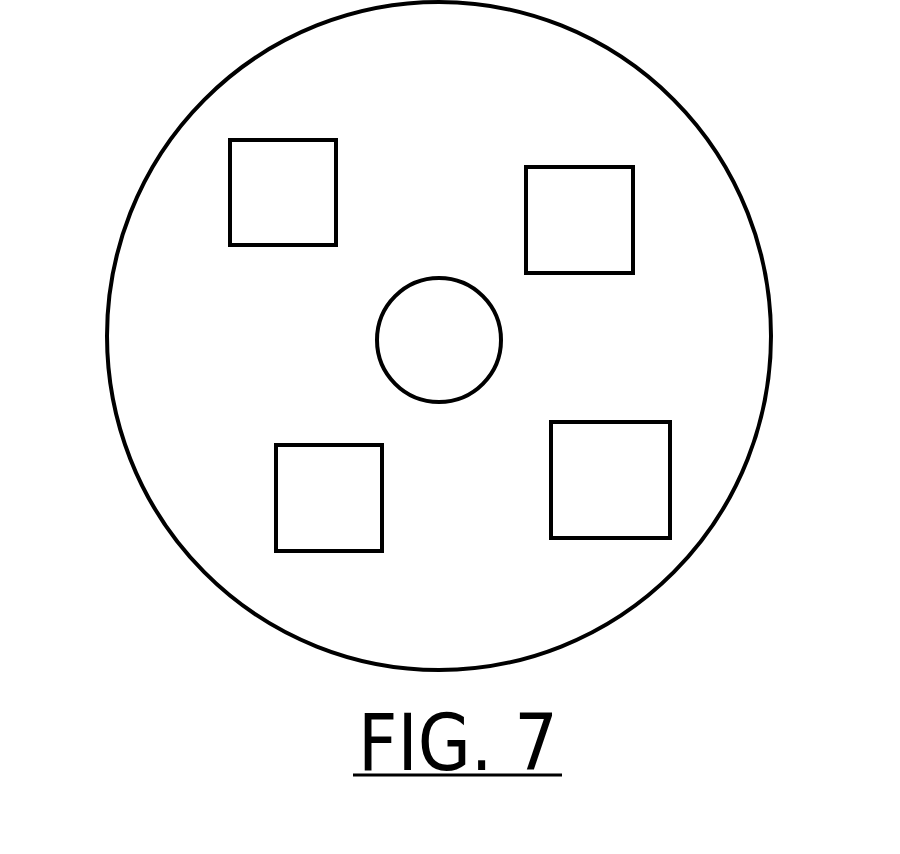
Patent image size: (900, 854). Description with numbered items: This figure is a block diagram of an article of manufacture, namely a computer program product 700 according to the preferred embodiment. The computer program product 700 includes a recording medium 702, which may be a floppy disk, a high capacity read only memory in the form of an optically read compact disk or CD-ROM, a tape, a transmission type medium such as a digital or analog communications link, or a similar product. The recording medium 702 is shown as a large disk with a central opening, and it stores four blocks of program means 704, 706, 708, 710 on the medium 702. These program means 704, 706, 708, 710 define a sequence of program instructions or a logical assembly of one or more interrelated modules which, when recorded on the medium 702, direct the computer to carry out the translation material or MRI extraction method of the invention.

The computer program product 700 is at (722, 117).
The recording medium 702 is at (167, 146).
The program means 704 is at (579, 220).
The program means 706 is at (610, 480).
The program means 708 is at (329, 498).
The program means 710 is at (283, 192).